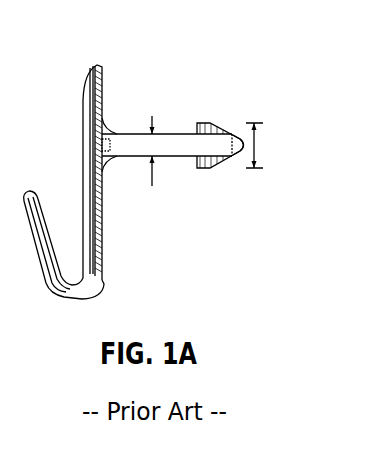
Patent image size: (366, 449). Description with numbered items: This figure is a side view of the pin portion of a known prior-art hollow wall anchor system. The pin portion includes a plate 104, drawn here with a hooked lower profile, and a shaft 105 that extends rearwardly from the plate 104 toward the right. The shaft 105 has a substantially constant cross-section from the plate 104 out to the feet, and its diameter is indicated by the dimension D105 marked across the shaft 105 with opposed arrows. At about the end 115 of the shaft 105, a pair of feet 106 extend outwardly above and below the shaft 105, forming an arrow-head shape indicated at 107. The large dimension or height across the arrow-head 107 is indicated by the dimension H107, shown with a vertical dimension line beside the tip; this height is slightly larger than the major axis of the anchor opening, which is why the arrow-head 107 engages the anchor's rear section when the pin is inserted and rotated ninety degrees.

The plate 104 is at (97, 73).
The shaft 105 is at (134, 160).
The shaft diameter D105 is at (151, 116).
The feet 106 is at (208, 122).
The arrow-head 107 is at (240, 128).
The height of arrow head H107 is at (257, 147).
The end of shaft 115 is at (231, 170).